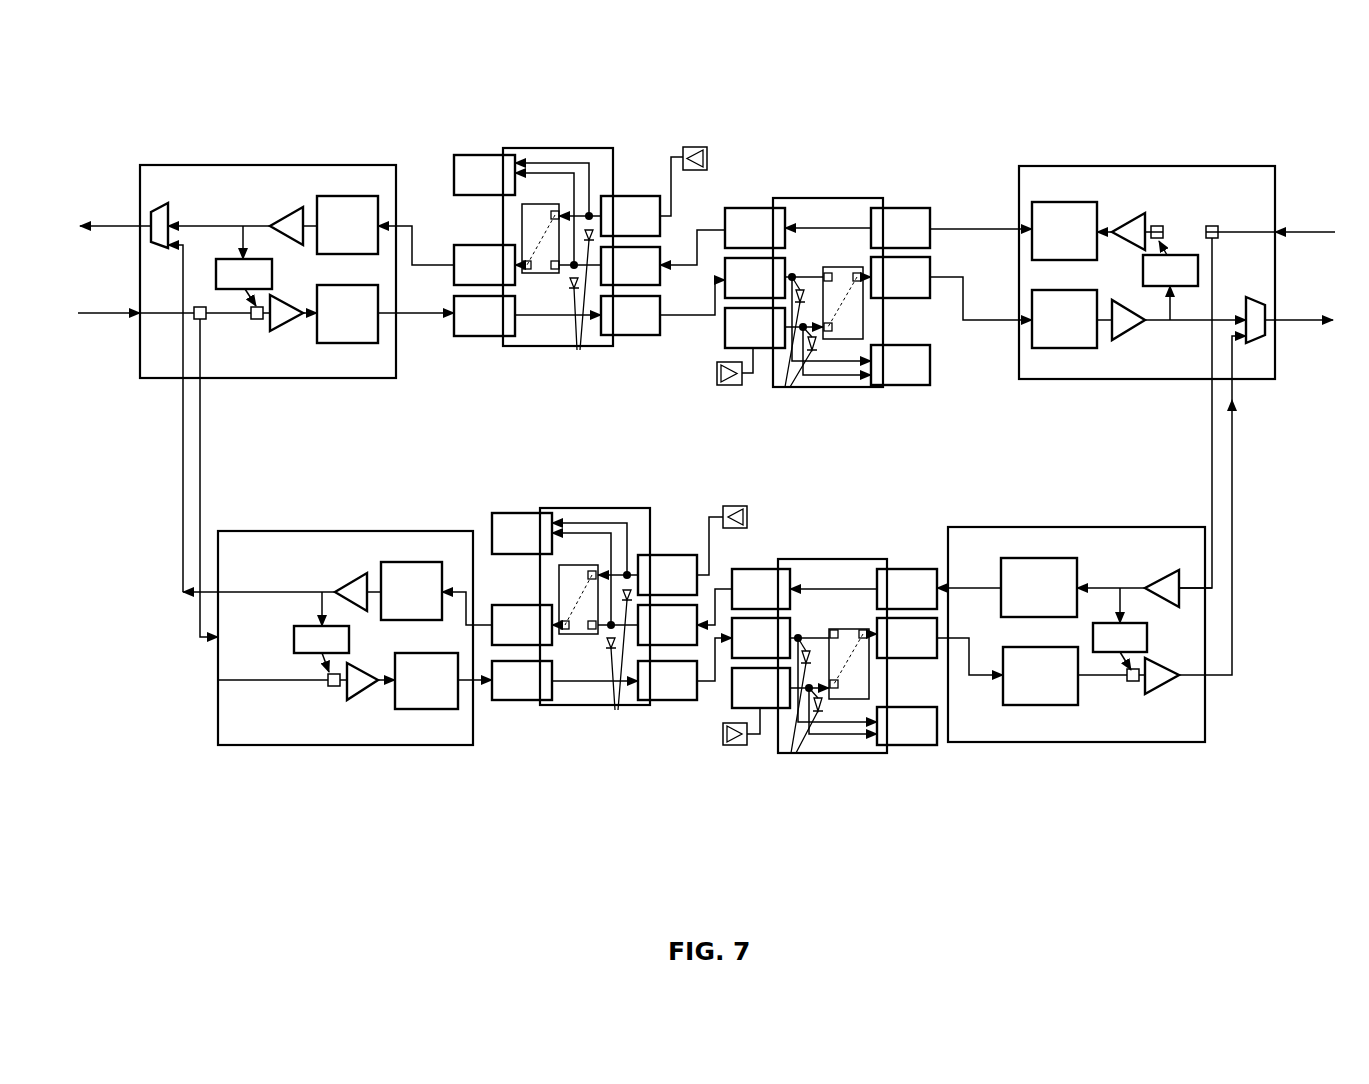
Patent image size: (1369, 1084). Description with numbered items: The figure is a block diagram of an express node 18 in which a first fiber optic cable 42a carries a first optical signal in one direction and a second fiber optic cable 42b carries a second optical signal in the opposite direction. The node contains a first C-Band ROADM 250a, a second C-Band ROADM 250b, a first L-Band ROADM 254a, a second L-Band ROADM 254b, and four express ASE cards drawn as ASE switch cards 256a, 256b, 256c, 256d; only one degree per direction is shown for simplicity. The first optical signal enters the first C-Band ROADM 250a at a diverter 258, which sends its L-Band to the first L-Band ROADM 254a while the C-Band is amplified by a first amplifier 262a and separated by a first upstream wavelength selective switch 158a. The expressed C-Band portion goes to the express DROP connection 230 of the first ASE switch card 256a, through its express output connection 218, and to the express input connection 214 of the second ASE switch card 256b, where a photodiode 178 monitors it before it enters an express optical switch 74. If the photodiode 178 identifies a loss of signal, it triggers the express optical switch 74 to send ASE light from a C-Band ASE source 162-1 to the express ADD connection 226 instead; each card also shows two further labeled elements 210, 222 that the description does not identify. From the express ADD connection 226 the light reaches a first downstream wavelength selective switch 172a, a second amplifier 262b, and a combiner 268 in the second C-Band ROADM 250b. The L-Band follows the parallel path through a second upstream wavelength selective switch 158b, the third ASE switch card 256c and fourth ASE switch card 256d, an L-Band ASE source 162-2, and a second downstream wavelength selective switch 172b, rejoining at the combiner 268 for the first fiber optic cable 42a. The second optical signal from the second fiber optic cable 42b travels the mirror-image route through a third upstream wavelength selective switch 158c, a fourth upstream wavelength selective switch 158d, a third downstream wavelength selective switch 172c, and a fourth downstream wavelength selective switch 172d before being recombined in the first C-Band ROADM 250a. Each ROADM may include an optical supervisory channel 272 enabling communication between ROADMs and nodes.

The express node 18 is at (1202, 68).
The first fiber optic cable 42a is at (117, 312).
The second fiber optic cable 42b is at (1297, 230).
The express optical switch 74 is at (540, 274).
The first upstream wavelength selective switch 158a is at (347, 314).
The second upstream wavelength selective switch 158b is at (426, 681).
The third upstream wavelength selective switch 158c is at (1064, 231).
The fourth upstream wavelength selective switch 158d is at (1039, 587).
The C-Band ASE source 162-1 is at (697, 147).
The L-Band ASE source 162-2 is at (736, 506).
The first downstream wavelength selective switch 172a is at (1064, 319).
The second downstream wavelength selective switch 172b is at (1040, 676).
The third downstream wavelength selective switch 172c is at (347, 225).
The fourth downstream wavelength selective switch 172d is at (411, 591).
The photodiode 178 is at (795, 765).
The control input 210 is at (695, 452).
The express input connection 214 is at (695, 452).
The express output connection 218 is at (695, 454).
The status output 222 is at (695, 450).
The express ADD connection 226 is at (695, 451).
The express DROP connection 230 is at (695, 454).
The first C-Band ROADM 250a is at (386, 165).
The second C-Band ROADM 250b is at (1117, 166).
The first L-Band ROADM 254a is at (440, 531).
The second L-Band ROADM 254b is at (1078, 527).
The first ASE switch card 256a is at (560, 148).
The second ASE switch card 256b is at (910, 180).
The third ASE switch card 256c is at (594, 508).
The fourth ASE switch card 256d is at (916, 538).
The diverter 258 is at (207, 322).
The first amplifier 262a is at (287, 326).
The second amplifier 262b is at (289, 207).
The combiner 268 is at (177, 197).
The optical supervisory channel 272 is at (230, 286).